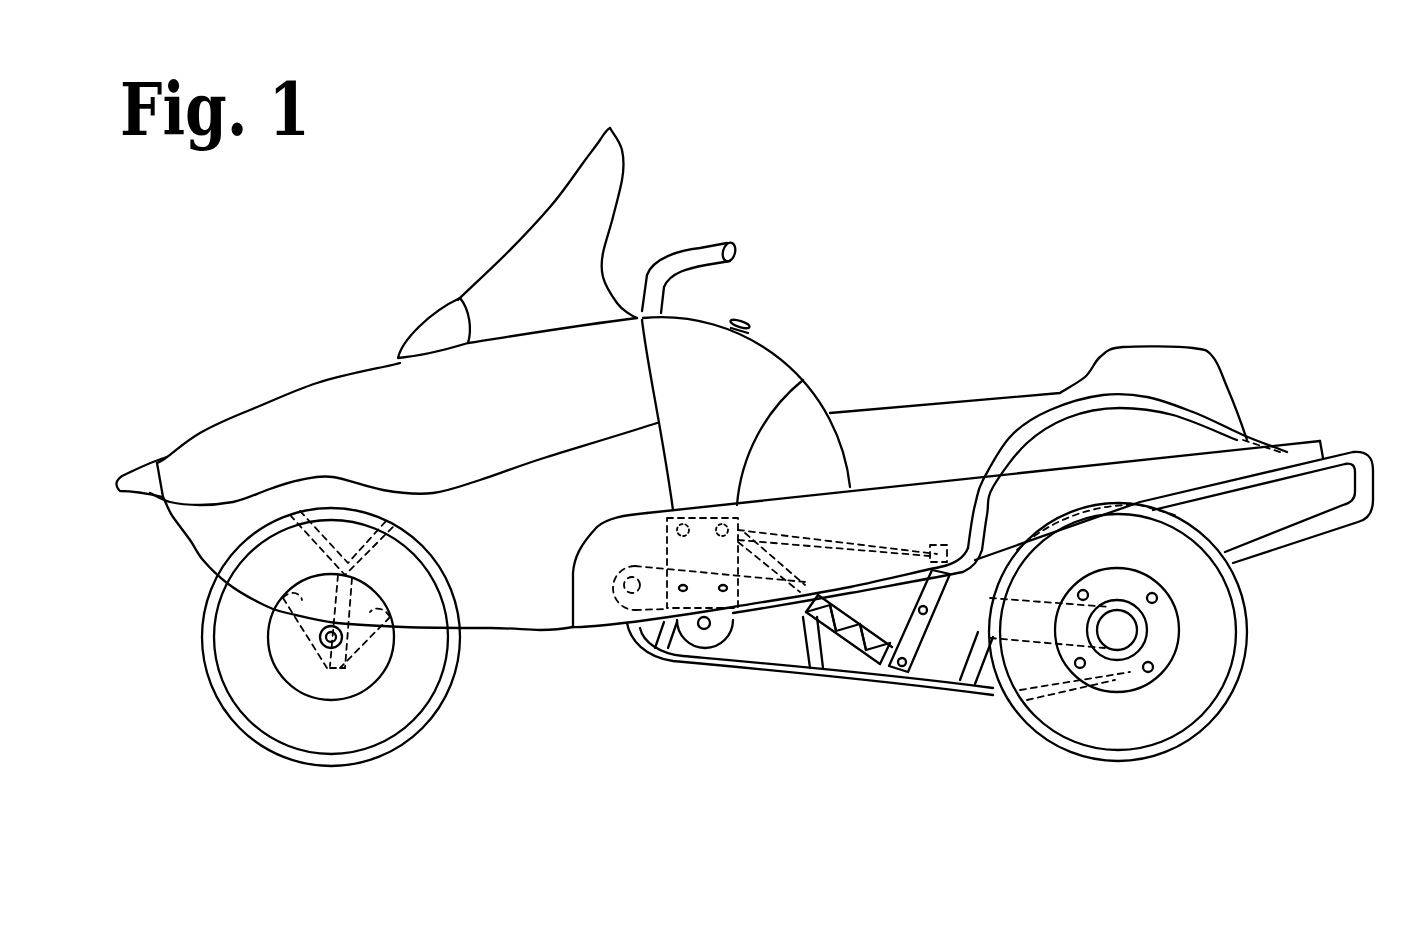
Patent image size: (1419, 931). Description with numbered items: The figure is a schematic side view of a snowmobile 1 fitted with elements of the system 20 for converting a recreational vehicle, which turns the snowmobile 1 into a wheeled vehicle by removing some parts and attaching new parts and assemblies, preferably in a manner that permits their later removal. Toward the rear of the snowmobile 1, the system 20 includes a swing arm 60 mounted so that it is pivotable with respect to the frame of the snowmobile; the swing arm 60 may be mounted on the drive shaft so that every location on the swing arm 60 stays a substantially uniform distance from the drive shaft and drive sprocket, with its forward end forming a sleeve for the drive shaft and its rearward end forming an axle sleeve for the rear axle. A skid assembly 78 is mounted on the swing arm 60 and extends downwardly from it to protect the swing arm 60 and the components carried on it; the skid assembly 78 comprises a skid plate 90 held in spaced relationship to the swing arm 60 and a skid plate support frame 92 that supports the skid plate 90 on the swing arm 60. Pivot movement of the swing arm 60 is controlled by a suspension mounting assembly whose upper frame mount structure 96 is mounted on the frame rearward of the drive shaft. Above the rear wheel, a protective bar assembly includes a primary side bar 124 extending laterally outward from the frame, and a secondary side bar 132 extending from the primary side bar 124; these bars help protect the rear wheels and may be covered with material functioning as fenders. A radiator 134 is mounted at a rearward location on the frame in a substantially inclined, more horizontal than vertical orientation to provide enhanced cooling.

The snowmobile 1 is at (778, 321).
The system for converting a recreational vehicle 20 is at (668, 672).
The swing arm 60 is at (880, 607).
The skid assembly 78 is at (745, 685).
The skid plate 90 is at (878, 625).
The skid plate support frame 92 is at (979, 635).
The upper frame mount structure 96 is at (728, 517).
The primary side bar 124 is at (1198, 493).
The secondary side bar 132 is at (1217, 425).
The radiator 134 is at (1270, 522).